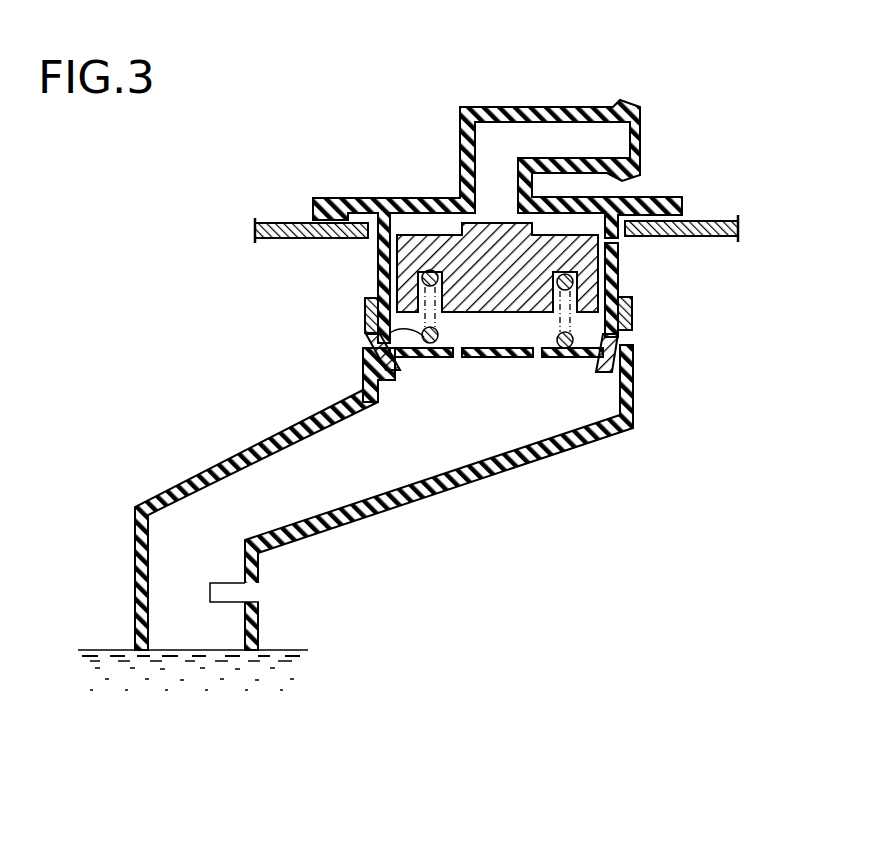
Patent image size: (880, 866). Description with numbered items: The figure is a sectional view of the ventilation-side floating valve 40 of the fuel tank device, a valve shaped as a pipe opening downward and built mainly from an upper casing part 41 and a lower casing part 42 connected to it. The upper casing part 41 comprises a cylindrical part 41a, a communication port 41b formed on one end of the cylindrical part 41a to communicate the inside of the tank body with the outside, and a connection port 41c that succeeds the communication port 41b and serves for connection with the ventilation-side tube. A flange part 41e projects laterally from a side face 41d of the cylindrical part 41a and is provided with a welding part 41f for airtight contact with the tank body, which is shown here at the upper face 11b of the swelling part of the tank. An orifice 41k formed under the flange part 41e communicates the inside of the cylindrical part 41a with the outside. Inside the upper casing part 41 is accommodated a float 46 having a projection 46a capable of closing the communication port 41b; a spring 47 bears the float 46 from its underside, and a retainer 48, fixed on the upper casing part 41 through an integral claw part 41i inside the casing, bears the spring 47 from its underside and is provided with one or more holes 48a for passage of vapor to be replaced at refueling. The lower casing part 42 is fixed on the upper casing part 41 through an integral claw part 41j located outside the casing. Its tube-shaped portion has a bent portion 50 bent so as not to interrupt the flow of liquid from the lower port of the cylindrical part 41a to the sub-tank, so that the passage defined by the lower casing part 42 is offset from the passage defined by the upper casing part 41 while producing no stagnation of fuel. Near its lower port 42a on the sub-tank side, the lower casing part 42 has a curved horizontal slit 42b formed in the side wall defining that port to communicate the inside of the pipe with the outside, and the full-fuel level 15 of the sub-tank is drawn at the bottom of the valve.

The ventilation-side floating valve 40 is at (152, 286).
The upper casing part 41 is at (560, 106).
The cylindrical part 41a is at (378, 292).
The communication port 41b is at (495, 207).
The connection port 41c is at (638, 111).
The side face 41d is at (620, 278).
The flange part 41e is at (358, 198).
The welding part 41f is at (313, 207).
The claw part 41i is at (390, 380).
The claw part 41j is at (633, 320).
The orifice 41k is at (622, 244).
The upper face of the swelling part 11b is at (692, 222).
The float 46 is at (397, 262).
The projection 46a is at (462, 228).
The spring 47 is at (365, 340).
The retainer 48 is at (578, 360).
The holes 48a is at (457, 360).
The bent portion 50 is at (245, 447).
The lower casing part 42 is at (486, 482).
The lower port 42a is at (228, 651).
The curved horizontal slit 42b is at (259, 592).
The full-fuel level 15 is at (100, 648).